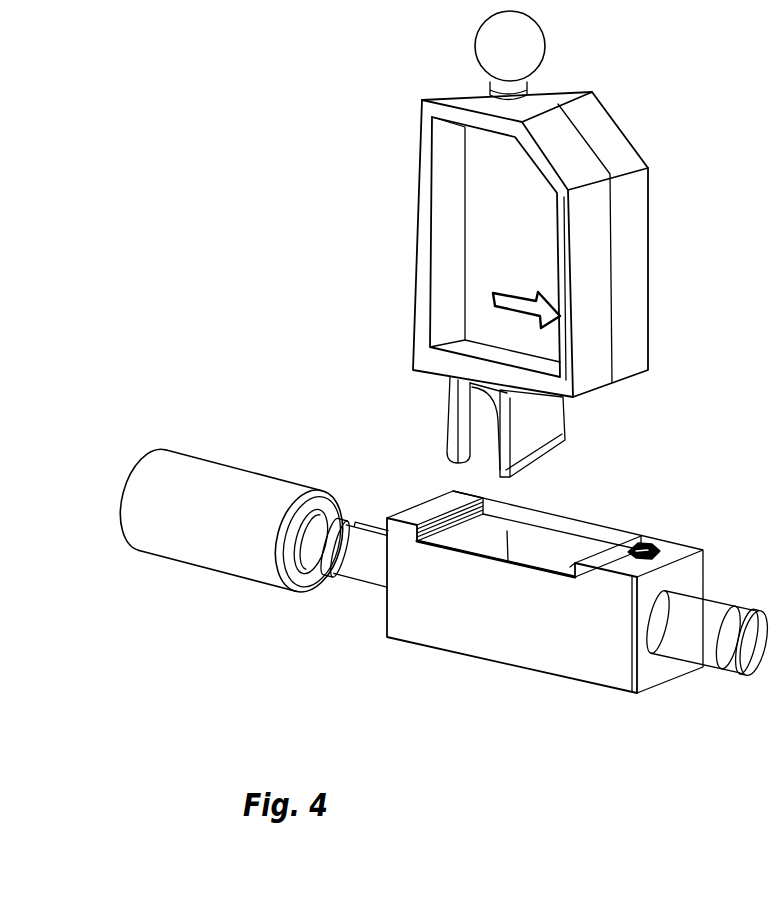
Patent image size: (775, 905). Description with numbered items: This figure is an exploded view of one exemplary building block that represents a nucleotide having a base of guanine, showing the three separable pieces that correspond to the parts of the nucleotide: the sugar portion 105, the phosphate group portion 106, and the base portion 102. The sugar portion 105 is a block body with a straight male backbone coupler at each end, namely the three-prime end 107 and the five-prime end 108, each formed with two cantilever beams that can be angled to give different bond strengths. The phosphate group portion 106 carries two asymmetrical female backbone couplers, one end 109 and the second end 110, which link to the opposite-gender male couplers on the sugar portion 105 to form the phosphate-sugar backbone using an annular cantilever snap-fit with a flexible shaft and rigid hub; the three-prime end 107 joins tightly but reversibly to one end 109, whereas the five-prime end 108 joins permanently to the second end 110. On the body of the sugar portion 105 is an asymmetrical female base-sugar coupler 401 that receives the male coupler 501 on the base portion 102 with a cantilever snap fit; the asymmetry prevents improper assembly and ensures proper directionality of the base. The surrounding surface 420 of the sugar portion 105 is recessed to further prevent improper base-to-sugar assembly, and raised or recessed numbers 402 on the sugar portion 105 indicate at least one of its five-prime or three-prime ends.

The base portion 102 is at (605, 272).
The sugar portion 105 is at (560, 601).
The phosphate group portion 106 is at (193, 535).
The 3' end 107 is at (713, 628).
The 5' end 108 is at (365, 565).
The one end of phosphate group portion 109 is at (141, 525).
The second end of phosphate group portion 110 is at (272, 555).
The asymmetrical female base-sugar coupler 401 is at (513, 541).
The raised or recessed numbers 402 is at (660, 553).
The surface of sugar portion 420 is at (600, 545).
The male coupler 501 is at (533, 423).